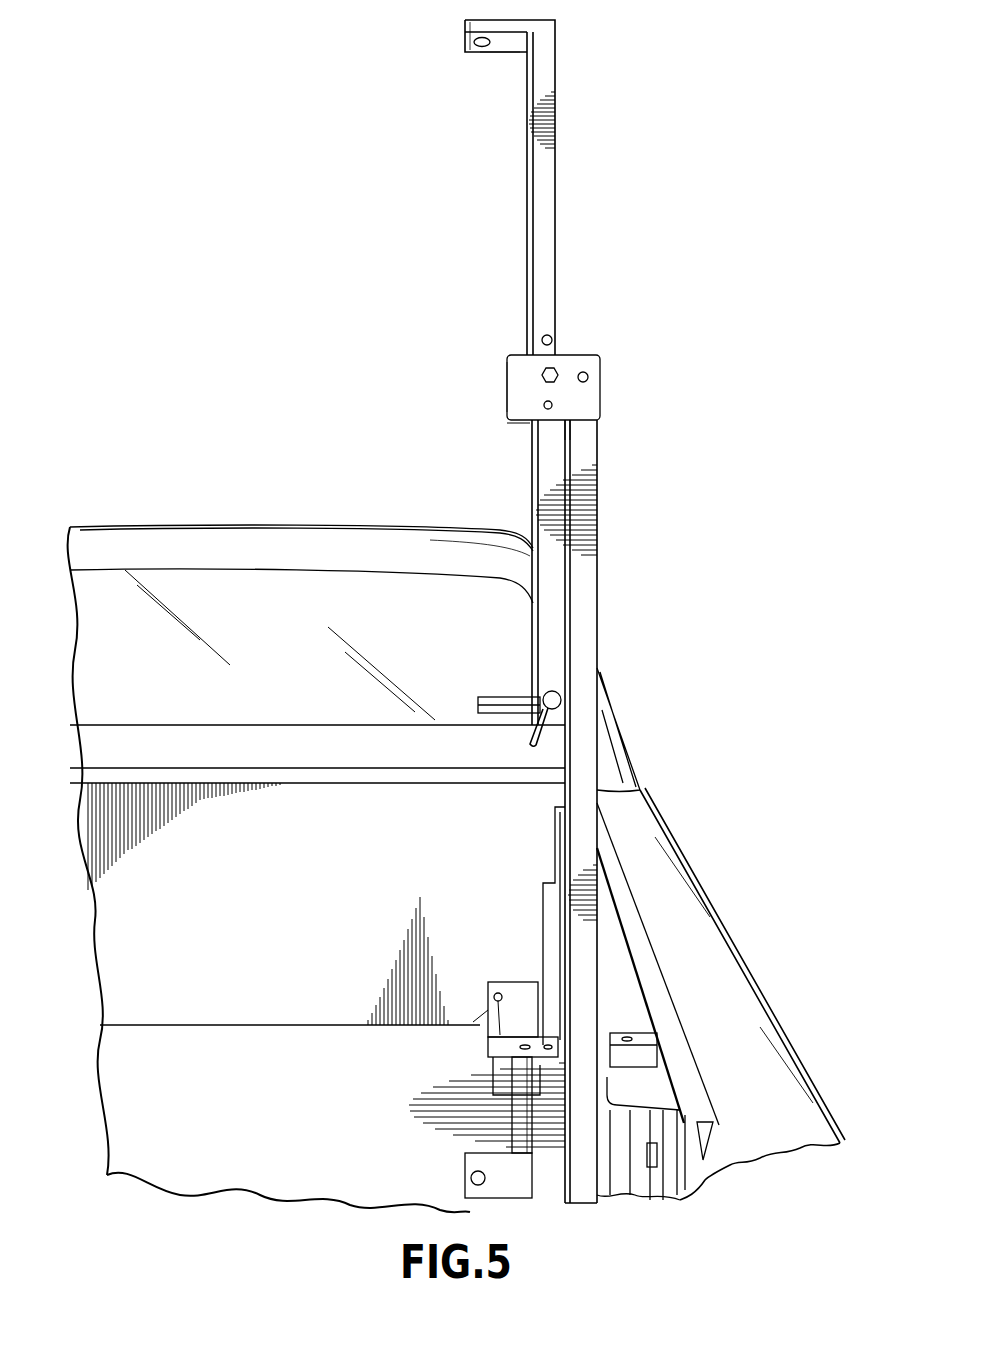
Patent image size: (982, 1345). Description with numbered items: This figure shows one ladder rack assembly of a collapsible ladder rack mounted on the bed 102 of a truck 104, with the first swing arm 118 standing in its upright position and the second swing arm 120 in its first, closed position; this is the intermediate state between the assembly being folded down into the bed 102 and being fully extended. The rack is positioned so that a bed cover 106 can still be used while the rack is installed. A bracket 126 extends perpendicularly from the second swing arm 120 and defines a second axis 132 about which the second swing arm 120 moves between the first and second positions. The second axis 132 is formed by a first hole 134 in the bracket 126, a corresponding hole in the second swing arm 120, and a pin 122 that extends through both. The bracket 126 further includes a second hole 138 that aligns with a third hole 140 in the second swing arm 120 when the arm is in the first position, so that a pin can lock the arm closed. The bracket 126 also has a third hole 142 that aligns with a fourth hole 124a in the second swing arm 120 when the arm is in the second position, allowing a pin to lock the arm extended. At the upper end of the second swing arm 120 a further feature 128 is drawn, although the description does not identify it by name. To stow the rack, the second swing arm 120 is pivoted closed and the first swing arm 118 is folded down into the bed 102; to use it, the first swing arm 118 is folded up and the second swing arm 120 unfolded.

The bed 102 is at (482, 823).
The truck 104 is at (355, 540).
The bed cover 106 is at (283, 740).
The first swing arm 118 is at (585, 632).
The second swing arm 120 is at (546, 177).
The pin 122 is at (556, 370).
The fourth hole 124a is at (542, 337).
The bracket 126 is at (509, 40).
The slot 128 is at (480, 50).
The second axis 132 is at (553, 372).
The first hole 134 is at (528, 374).
The second hole 138 is at (545, 407).
The third hole 140 is at (571, 430).
The third hole 142 is at (589, 378).